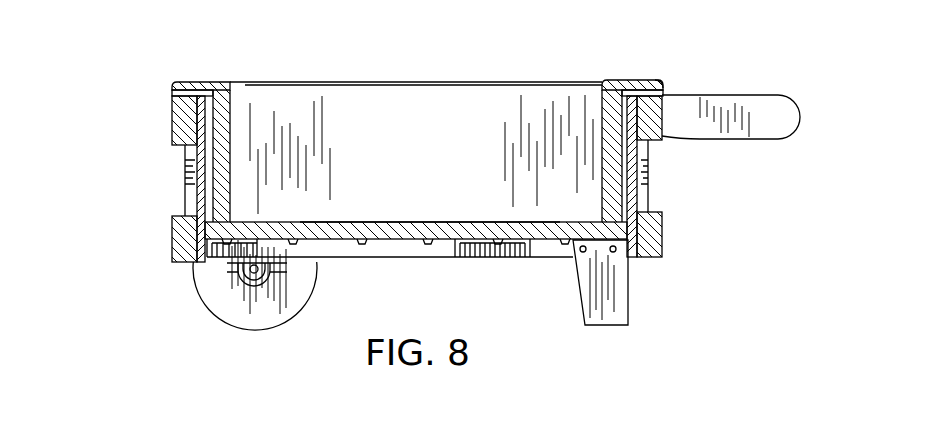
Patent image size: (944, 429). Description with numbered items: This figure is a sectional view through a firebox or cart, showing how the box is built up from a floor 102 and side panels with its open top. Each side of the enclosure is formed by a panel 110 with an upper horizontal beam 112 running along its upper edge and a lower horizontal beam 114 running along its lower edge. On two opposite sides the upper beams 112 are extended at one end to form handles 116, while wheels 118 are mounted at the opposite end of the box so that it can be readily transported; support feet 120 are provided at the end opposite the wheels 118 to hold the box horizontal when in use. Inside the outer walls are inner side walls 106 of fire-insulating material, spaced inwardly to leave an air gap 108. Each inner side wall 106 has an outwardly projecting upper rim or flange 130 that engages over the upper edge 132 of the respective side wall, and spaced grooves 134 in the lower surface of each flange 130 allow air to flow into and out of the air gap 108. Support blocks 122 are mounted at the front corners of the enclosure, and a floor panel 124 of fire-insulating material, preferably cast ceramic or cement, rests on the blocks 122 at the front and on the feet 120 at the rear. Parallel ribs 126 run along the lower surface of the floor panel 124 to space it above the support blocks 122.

The floor 102 is at (360, 221).
The inner side walls 106 is at (223, 107).
The air gap 108 is at (207, 140).
The panel 110 is at (185, 158).
The upper horizontal beams 112 is at (177, 118).
The lower horizontal beams 114 is at (173, 220).
The handles 116 is at (727, 102).
The wheels 118 is at (228, 307).
The support feet 120 is at (613, 295).
The support blocks 122 is at (205, 262).
The floor panel 124 is at (427, 222).
The ribs 126 is at (500, 243).
The upper rim or flange 130 is at (193, 83).
The upper edge 132 is at (652, 83).
The grooves 134 is at (175, 93).